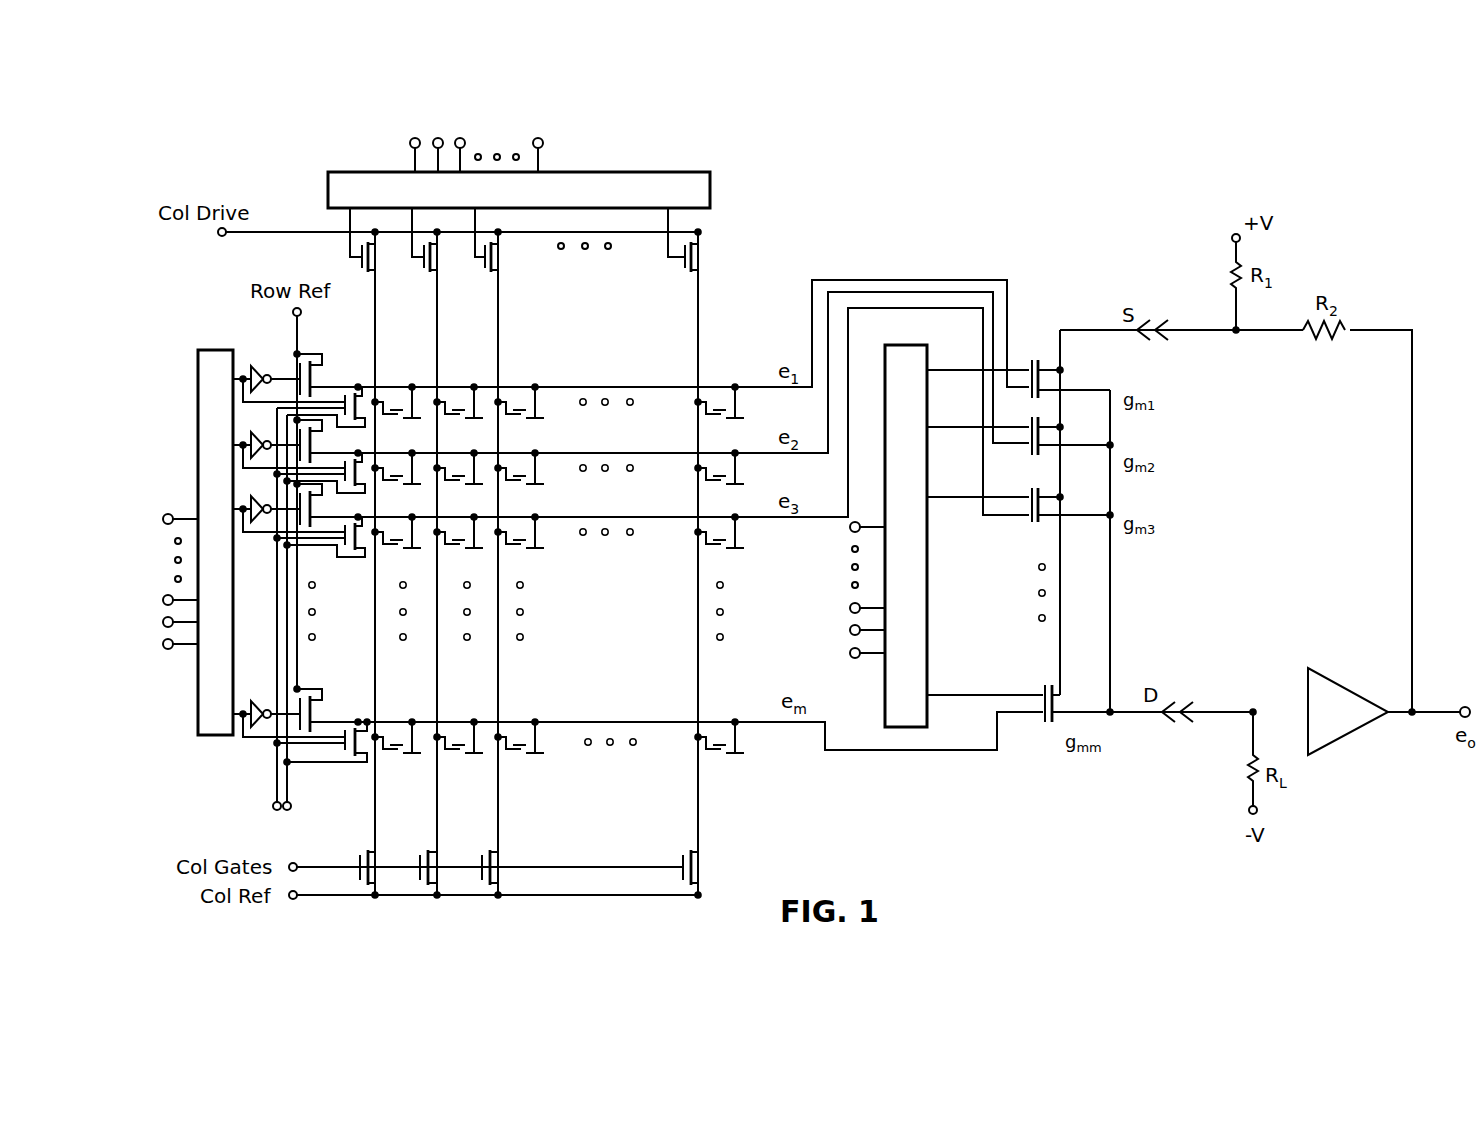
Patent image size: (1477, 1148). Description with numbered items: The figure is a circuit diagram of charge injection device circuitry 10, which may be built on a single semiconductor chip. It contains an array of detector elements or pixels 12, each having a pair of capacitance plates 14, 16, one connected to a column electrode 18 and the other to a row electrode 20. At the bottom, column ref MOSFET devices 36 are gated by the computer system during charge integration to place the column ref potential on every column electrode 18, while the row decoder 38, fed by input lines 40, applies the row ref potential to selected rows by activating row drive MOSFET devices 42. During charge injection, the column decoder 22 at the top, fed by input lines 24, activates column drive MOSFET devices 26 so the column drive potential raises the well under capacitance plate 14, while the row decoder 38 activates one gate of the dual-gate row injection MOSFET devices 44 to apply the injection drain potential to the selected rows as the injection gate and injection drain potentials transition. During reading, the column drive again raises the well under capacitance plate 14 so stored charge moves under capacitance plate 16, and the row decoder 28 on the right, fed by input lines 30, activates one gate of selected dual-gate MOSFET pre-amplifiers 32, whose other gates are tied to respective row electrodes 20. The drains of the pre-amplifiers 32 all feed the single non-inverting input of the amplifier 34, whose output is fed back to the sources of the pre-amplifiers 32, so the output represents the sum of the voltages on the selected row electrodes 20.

The charge injection device circuitry 10 is at (1010, 185).
The detector element 12 is at (526, 537).
The capacitance plate 14 is at (505, 416).
The capacitance plate 16 is at (540, 417).
The column electrode 18 is at (436, 312).
The row electrode 20 is at (665, 390).
The column decoder 22 is at (600, 172).
The input lines 24 is at (432, 128).
The column drive MOSFET device 26 is at (512, 252).
The row decoder 28 is at (930, 603).
The input lines 30 is at (836, 624).
The dual-gate MOSFET pre-amplifier 32 is at (1036, 352).
The amplifier 34 is at (1343, 680).
The column ref MOSFET device 36 is at (364, 848).
The row decoder 38 is at (198, 425).
The input lines 40 is at (178, 672).
The row drive MOSFET device 42 is at (330, 383).
The dual-gate row injection MOSFET device 44 is at (352, 572).